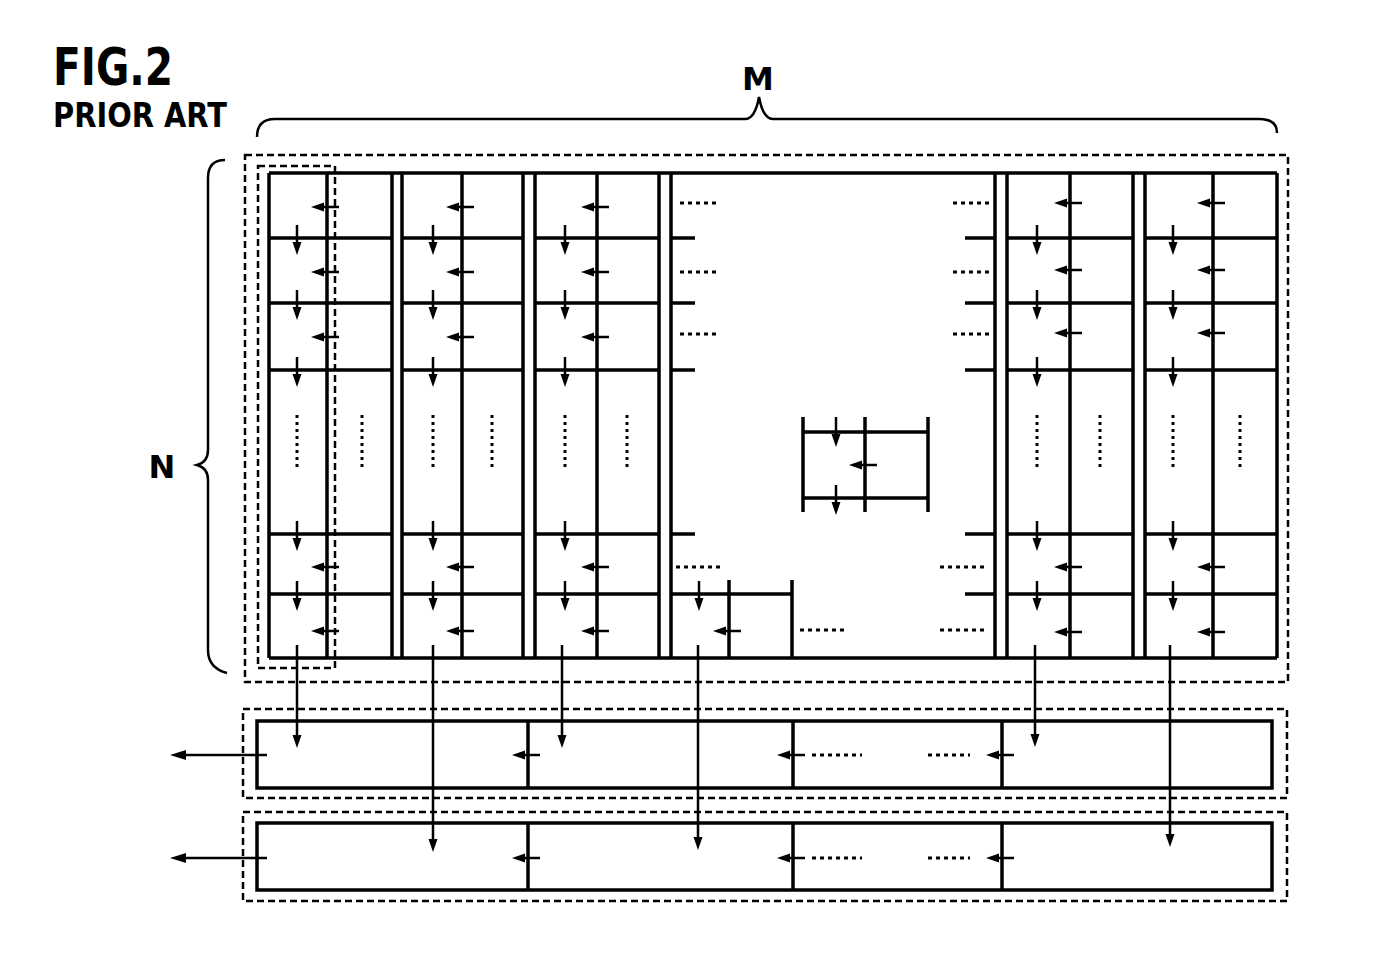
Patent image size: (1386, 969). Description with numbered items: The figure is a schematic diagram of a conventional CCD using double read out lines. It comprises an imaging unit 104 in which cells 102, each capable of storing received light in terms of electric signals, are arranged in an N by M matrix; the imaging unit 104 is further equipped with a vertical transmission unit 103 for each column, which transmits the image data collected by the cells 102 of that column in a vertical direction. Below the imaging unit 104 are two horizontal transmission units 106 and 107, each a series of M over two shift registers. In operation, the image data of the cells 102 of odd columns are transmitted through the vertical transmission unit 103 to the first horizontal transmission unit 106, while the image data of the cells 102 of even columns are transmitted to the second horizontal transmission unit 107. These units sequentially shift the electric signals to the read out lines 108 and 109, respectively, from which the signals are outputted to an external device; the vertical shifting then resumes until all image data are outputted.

The cell 102 is at (1263, 187).
The vertical transmission unit 103 is at (245, 252).
The imaging unit 104 is at (1288, 262).
The first horizontal transmission unit 106 is at (1287, 745).
The second horizontal transmission unit 107 is at (1287, 845).
The read out line 108 is at (192, 758).
The read out line 109 is at (192, 861).